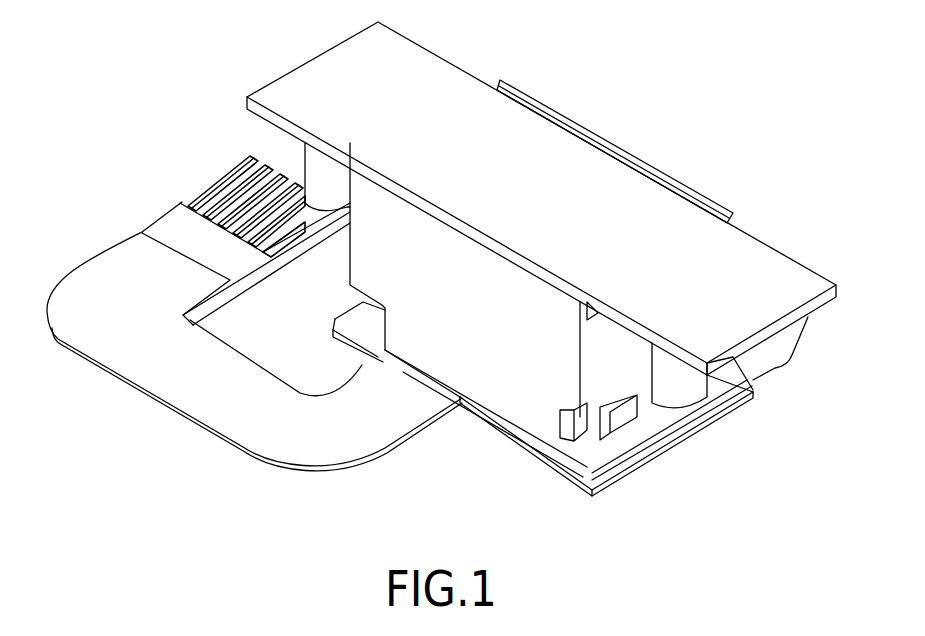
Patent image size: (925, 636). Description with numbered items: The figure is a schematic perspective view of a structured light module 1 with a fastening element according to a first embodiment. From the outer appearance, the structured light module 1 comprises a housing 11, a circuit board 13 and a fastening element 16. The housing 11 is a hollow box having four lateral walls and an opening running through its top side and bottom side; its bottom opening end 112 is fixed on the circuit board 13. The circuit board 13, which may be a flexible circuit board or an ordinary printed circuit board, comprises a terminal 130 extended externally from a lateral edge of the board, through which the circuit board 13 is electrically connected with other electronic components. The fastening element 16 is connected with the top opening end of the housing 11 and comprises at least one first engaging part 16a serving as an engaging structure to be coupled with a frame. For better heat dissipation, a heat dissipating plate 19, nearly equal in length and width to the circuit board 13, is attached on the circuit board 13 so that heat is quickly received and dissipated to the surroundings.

The structured light module 1 is at (743, 105).
The housing 11 is at (363, 242).
The bottom opening end 112 is at (408, 367).
The circuit board 13 is at (195, 398).
The terminal 130 is at (220, 173).
The fastening element 16 is at (753, 265).
The first engaging part 16a is at (320, 170).
The heat dissipating plate 19 is at (645, 458).